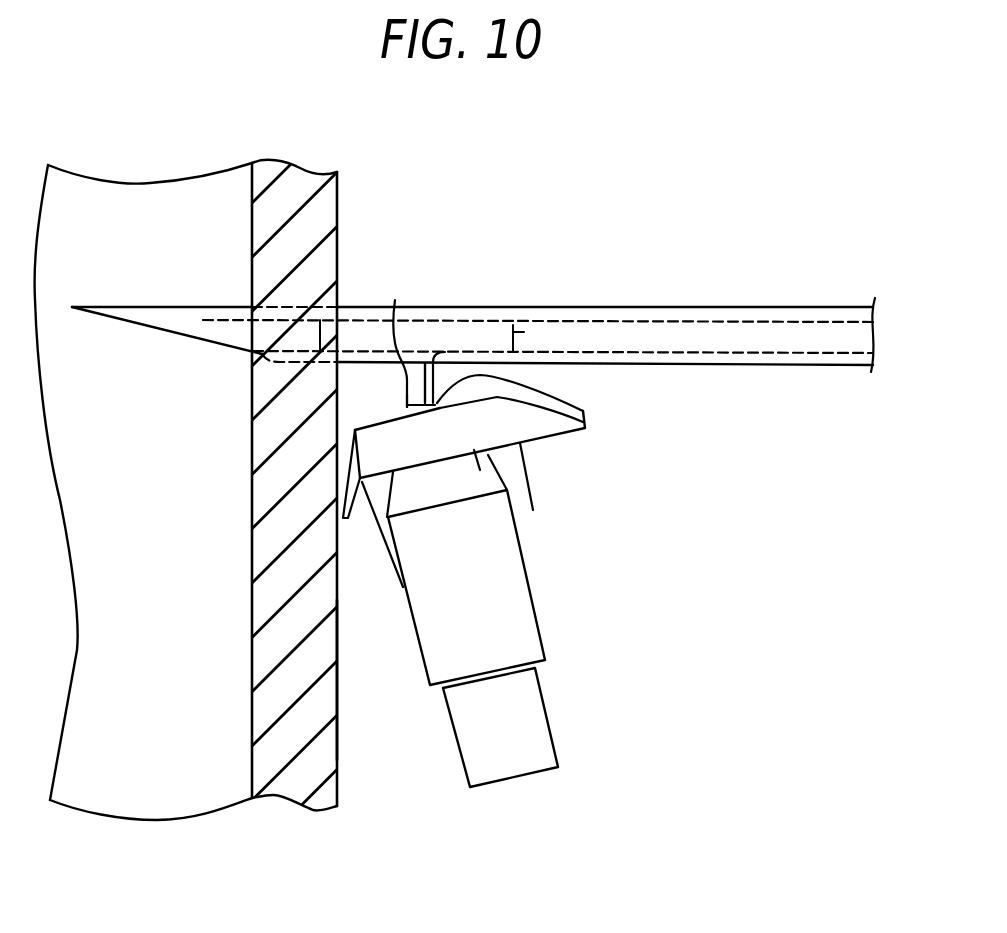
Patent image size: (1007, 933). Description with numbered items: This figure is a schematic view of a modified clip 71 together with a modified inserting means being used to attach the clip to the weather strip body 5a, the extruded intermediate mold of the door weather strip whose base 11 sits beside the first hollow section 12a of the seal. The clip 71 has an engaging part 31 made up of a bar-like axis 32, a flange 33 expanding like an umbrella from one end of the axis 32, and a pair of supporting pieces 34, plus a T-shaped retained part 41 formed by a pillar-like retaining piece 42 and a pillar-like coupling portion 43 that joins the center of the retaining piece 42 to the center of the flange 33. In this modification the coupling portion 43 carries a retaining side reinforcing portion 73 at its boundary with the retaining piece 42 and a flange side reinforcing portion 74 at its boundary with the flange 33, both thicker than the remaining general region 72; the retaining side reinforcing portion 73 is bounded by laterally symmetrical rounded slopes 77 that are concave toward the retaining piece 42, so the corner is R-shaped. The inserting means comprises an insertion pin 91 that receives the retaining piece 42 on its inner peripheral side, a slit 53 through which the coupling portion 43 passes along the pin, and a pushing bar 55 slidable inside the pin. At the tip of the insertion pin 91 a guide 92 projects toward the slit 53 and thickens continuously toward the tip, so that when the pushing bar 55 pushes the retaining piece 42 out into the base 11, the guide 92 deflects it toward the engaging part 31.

The weather strip body 5a is at (345, 688).
The base 11 is at (343, 778).
The first hollow section 12a is at (170, 805).
The engaging part 31 is at (558, 767).
The axis 32 is at (537, 497).
The flange 33 is at (585, 428).
The supporting pieces 34 is at (497, 642).
The retained part 41 is at (638, 372).
The retaining piece 42 is at (533, 337).
The coupling portion 43 is at (583, 411).
The slit 53 is at (825, 366).
The pushing bar 55 is at (507, 325).
The clip 71 is at (645, 619).
The general region 72 is at (395, 300).
The retaining side reinforcing portion 73 is at (463, 350).
The flange side reinforcing portion 74 is at (412, 411).
The slopes 77 is at (463, 350).
The insertion pin 91 is at (732, 277).
The guide 92 is at (203, 320).